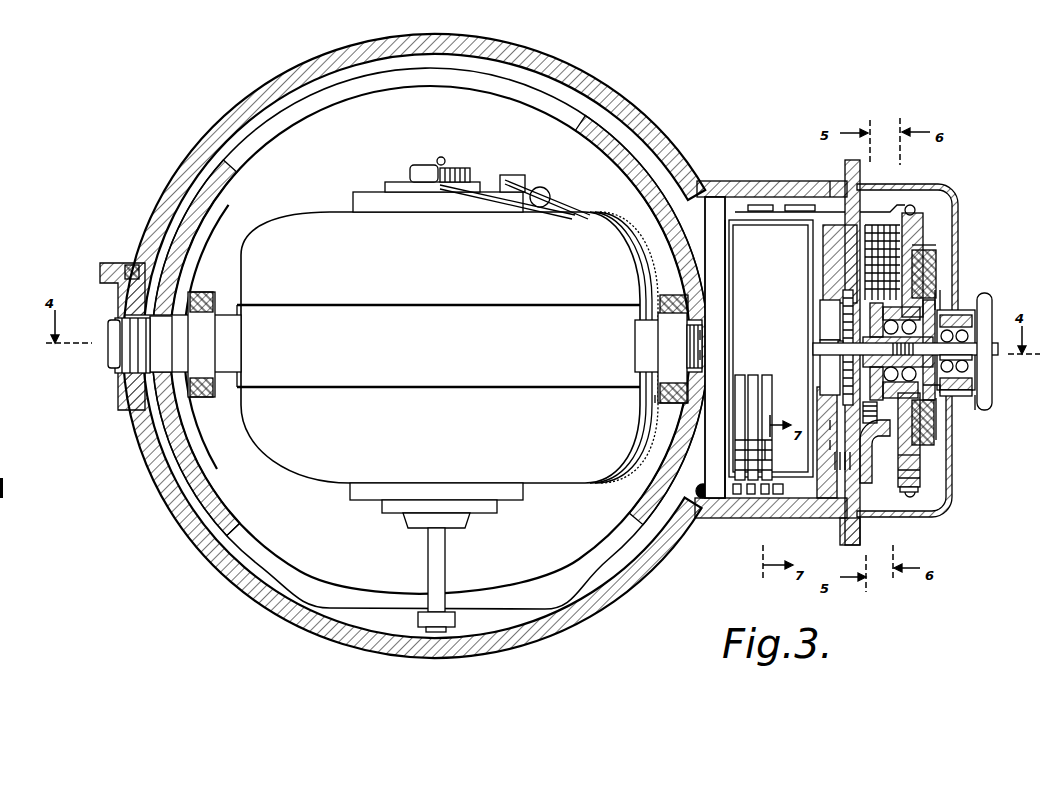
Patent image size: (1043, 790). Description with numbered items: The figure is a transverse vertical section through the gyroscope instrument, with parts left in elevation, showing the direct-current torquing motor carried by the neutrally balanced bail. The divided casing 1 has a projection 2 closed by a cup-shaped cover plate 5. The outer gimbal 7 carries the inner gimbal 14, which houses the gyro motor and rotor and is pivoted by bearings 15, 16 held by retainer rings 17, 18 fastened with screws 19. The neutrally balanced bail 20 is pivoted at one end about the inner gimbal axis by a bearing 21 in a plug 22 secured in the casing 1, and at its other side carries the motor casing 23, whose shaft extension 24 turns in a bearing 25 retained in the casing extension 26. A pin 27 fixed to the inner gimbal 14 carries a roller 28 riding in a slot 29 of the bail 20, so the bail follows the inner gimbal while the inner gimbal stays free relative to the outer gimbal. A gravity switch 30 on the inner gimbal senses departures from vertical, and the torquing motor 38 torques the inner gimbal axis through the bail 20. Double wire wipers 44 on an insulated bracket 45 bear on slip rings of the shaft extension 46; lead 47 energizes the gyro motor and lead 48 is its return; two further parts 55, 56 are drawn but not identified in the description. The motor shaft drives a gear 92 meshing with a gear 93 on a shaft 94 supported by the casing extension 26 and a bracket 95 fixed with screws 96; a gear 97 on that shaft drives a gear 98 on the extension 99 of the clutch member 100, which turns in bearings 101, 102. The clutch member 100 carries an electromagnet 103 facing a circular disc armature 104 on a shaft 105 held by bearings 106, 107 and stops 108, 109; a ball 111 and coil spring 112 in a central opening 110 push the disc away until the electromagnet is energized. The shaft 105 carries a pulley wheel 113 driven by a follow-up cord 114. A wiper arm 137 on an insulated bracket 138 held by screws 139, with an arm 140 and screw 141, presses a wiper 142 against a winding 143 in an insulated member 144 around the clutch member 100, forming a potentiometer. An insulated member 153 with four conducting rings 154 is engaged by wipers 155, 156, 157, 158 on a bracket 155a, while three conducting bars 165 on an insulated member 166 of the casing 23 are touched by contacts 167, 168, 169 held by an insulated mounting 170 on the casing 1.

The divided casing 1 is at (147, 465).
The projection 2 is at (735, 183).
The cup-shaped cover plate 5 is at (937, 517).
The outer gimbal 7 is at (648, 404).
The inner gimbal 14 is at (305, 222).
The bearing 15 is at (660, 330).
The bearing 16 is at (230, 337).
The retainer ring 17 is at (678, 403).
The retainer ring 18 is at (195, 400).
The screws 19 is at (208, 292).
The neutrally balanced bail 20 is at (576, 100).
The bearing 21 is at (155, 332).
The plug 22 is at (110, 355).
The motor casing 23 is at (771, 348).
The shaft extension 24 is at (820, 345).
The bearing 25 is at (828, 358).
The casing extension 26 is at (777, 514).
The pin 27 is at (432, 553).
The roller 28 is at (425, 615).
The slot 29 is at (248, 535).
The gravity switch 30 is at (545, 193).
The torquing motor 38 is at (725, 215).
The double wire wipers 44 is at (703, 343).
The insulated bracket 45 is at (703, 336).
The shaft extension 46 is at (703, 352).
The lead 47 is at (510, 200).
The return lead 48 is at (575, 210).
The wall 55 is at (715, 265).
The wall liner 56 is at (728, 254).
The gear 92 is at (838, 332).
The gear 93 is at (822, 400).
The shaft 94 is at (835, 425).
The bracket 95 is at (878, 450).
The screws 96 is at (880, 505).
The gear 97 is at (833, 445).
The gear 98 is at (832, 310).
The extension 99 is at (845, 365).
The clutch member 100 is at (935, 312).
The bearing 101 is at (915, 290).
The bearing 102 is at (915, 300).
The electromagnet 103 is at (930, 280).
The circular disc armature 104 is at (935, 445).
The shaft 105 is at (968, 352).
The bearing 106 is at (968, 385).
The bearing 107 is at (968, 365).
The stop 108 is at (968, 340).
The stop 109 is at (965, 332).
The central opening 110 is at (838, 380).
The ball 111 is at (935, 393).
The coil spring 112 is at (937, 420).
The pulley wheel 113 is at (992, 312).
The follow-up cord 114 is at (975, 400).
The wiper arm 137 is at (887, 203).
The insulated bracket 138 is at (778, 205).
The screws 139 is at (757, 205).
The arm 140 is at (800, 205).
The screw 141 is at (830, 182).
The wiper 142 is at (907, 205).
The winding 143 is at (913, 208).
The insulated member 144 is at (918, 490).
The insulated member 153 is at (920, 465).
The conducting rings 154 is at (920, 480).
The wiper 155 is at (915, 215).
The bracket 155a is at (905, 285).
The wiper 156 is at (905, 235).
The wiper 157 is at (905, 250).
The wiper 158 is at (905, 265).
The conducting bars 165 is at (768, 375).
The insulated member 166 is at (765, 425).
The electrical contact 167 is at (735, 498).
The electrical contact 168 is at (750, 498).
The electrical contact 169 is at (765, 498).
The insulated mounting 170 is at (778, 498).